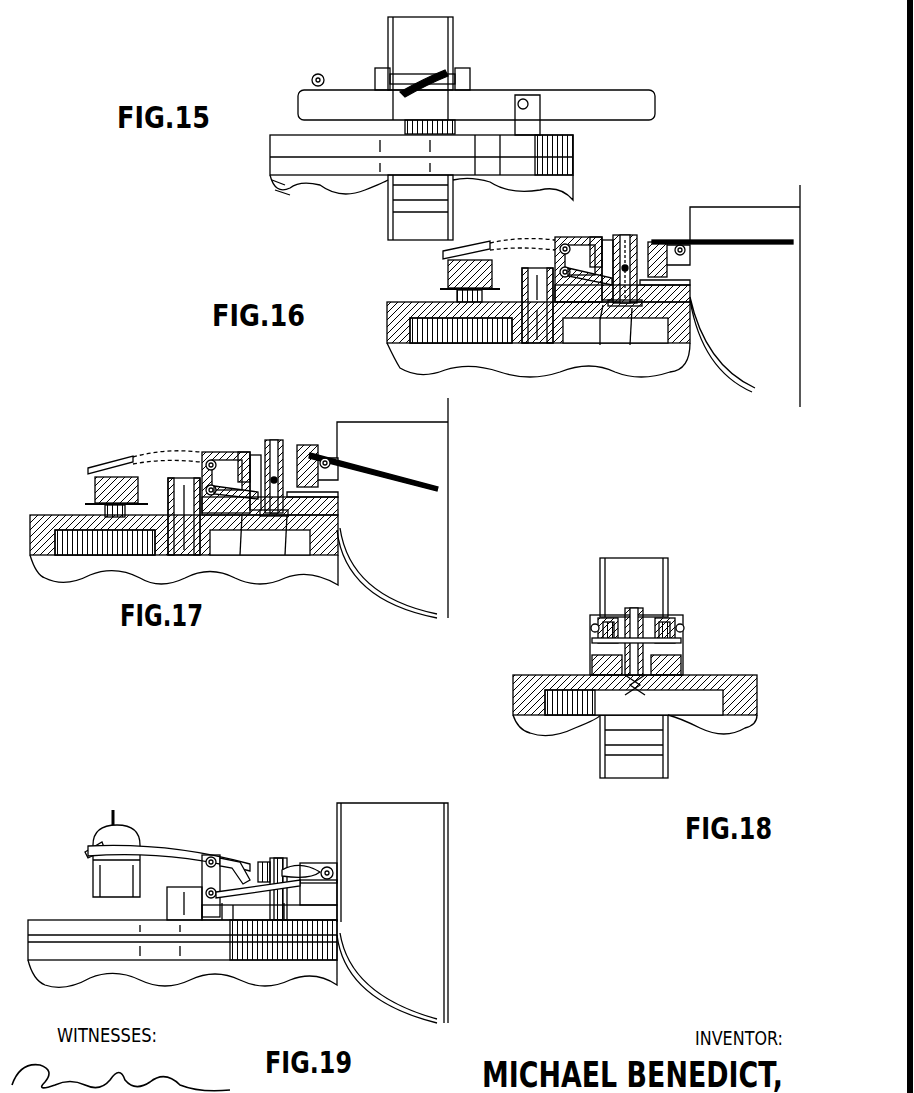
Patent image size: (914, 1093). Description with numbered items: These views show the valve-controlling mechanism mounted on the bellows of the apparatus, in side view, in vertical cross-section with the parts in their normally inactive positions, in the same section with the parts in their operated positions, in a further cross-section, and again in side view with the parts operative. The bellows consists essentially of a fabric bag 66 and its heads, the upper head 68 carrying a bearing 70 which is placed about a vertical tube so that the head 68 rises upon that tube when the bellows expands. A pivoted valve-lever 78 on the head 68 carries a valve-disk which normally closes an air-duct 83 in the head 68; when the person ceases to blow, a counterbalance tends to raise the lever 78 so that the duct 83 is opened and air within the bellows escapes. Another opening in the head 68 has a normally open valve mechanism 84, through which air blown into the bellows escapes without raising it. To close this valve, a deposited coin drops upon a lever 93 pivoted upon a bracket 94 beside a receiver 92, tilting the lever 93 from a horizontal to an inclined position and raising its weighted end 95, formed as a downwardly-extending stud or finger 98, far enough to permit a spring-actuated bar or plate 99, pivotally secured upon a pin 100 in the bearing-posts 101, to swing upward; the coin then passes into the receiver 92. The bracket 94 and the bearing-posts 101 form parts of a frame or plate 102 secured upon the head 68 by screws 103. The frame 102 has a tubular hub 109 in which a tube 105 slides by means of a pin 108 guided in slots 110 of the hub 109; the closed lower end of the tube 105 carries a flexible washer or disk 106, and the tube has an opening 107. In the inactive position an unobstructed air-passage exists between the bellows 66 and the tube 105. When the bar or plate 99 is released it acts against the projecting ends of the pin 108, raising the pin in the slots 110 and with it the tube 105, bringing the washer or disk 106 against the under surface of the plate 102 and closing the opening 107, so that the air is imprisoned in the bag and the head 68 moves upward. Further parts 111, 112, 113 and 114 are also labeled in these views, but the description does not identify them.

In FIG. 15, the bag 66 is at (310, 192).
In FIG. 16, the bag 66 is at (472, 355).
In FIG. 17, the bag 66 is at (62, 580).
In FIG. 18, the bag 66 is at (738, 740).
In FIG. 19, the bag 66 is at (122, 975).
In FIG. 15, the upper head 68 is at (300, 138).
In FIG. 16, the upper head 68 is at (676, 350).
In FIG. 17, the upper head 68 is at (62, 518).
In FIG. 18, the upper head 68 is at (552, 677).
In FIG. 19, the upper head 68 is at (182, 929).
In FIG. 16, the bearing 70 is at (524, 278).
In FIG. 17, the bearing 70 is at (170, 490).
In FIG. 19, the bearing 70 is at (168, 900).
In FIG. 15, the valve-lever 78 is at (550, 97).
In FIG. 16, the valve-lever 78 is at (450, 275).
In FIG. 17, the valve-lever 78 is at (96, 488).
In FIG. 19, the valve-lever 78 is at (122, 832).
In FIG. 16, the air-duct 83 is at (468, 304).
In FIG. 17, the air-duct 83 is at (115, 520).
In FIG. 16, the valve mechanism 84 is at (625, 232).
In FIG. 17, the valve mechanism 84 is at (203, 410).
In FIG. 15, the receiver 92 is at (445, 30).
In FIG. 16, the receiver 92 is at (726, 212).
In FIG. 17, the receiver 92 is at (384, 428).
In FIG. 18, the receiver 92 is at (608, 560).
In FIG. 19, the receiver 92 is at (412, 812).
In FIG. 16, the lever 93 is at (757, 241).
In FIG. 17, the lever 93 is at (414, 478).
In FIG. 16, the bracket 94 is at (686, 255).
In FIG. 17, the bracket 94 is at (330, 470).
In FIG. 19, the bracket 94 is at (334, 876).
In FIG. 16, the weighted end 95 is at (660, 244).
In FIG. 17, the weighted end 95 is at (310, 448).
In FIG. 18, the weighted end 95 is at (600, 618).
In FIG. 19, the weighted end 95 is at (318, 862).
In FIG. 16, the stud or finger 98 is at (676, 268).
In FIG. 17, the stud or finger 98 is at (332, 482).
In FIG. 18, the stud or finger 98 is at (591, 628).
In FIG. 16, the bar or plate 99 is at (666, 283).
In FIG. 17, the bar or plate 99 is at (318, 482).
In FIG. 19, the bar or plate 99 is at (233, 920).
In FIG. 16, the pin 100 is at (560, 268).
In FIG. 17, the pin 100 is at (207, 486).
In FIG. 19, the pin 100 is at (211, 898).
In FIG. 16, the bearing-posts 101 is at (577, 261).
In FIG. 17, the bearing-posts 101 is at (227, 453).
In FIG. 19, the bearing-posts 101 is at (202, 876).
In FIG. 15, the frame or plate 102 is at (385, 133).
In FIG. 16, the frame or plate 102 is at (690, 302).
In FIG. 17, the frame or plate 102 is at (228, 516).
In FIG. 18, the frame or plate 102 is at (684, 664).
In FIG. 19, the frame or plate 102 is at (310, 913).
In FIG. 19, the screws 103 is at (222, 920).
In FIG. 16, the tube 105 is at (635, 245).
In FIG. 17, the tube 105 is at (290, 445).
In FIG. 18, the tube 105 is at (638, 610).
In FIG. 19, the tube 105 is at (285, 860).
In FIG. 16, the flexible washer or disk 106 is at (600, 345).
In FIG. 17, the flexible washer or disk 106 is at (240, 555).
In FIG. 18, the flexible washer or disk 106 is at (622, 695).
In FIG. 16, the opening 107 is at (630, 345).
In FIG. 17, the opening 107 is at (285, 555).
In FIG. 16, the pin 108 is at (624, 262).
In FIG. 17, the pin 108 is at (274, 477).
In FIG. 18, the pin 108 is at (593, 642).
In FIG. 19, the pin 108 is at (262, 894).
In FIG. 16, the tubular hub 109 is at (606, 242).
In FIG. 17, the tubular hub 109 is at (258, 455).
In FIG. 19, the tubular hub 109 is at (292, 866).
In FIG. 18, the slots 110 is at (610, 620).
In FIG. 19, the slots 110 is at (265, 862).
In FIG. 15, the lever arm 111 is at (435, 70).
In FIG. 16, the lever arm 111 is at (512, 232).
In FIG. 17, the lever arm 111 is at (133, 458).
In FIG. 19, the lever arm 111 is at (163, 850).
In FIG. 15, the handle 112 is at (410, 97).
In FIG. 16, the handle 112 is at (443, 254).
In FIG. 17, the handle 112 is at (90, 466).
In FIG. 19, the handle 112 is at (88, 848).
In FIG. 15, the pivot 113 is at (376, 78).
In FIG. 16, the pivot 113 is at (560, 246).
In FIG. 17, the pivot 113 is at (207, 461).
In FIG. 19, the pivot 113 is at (211, 856).
In FIG. 16, the link 114 is at (592, 240).
In FIG. 17, the link 114 is at (244, 452).
In FIG. 19, the link 114 is at (244, 866).